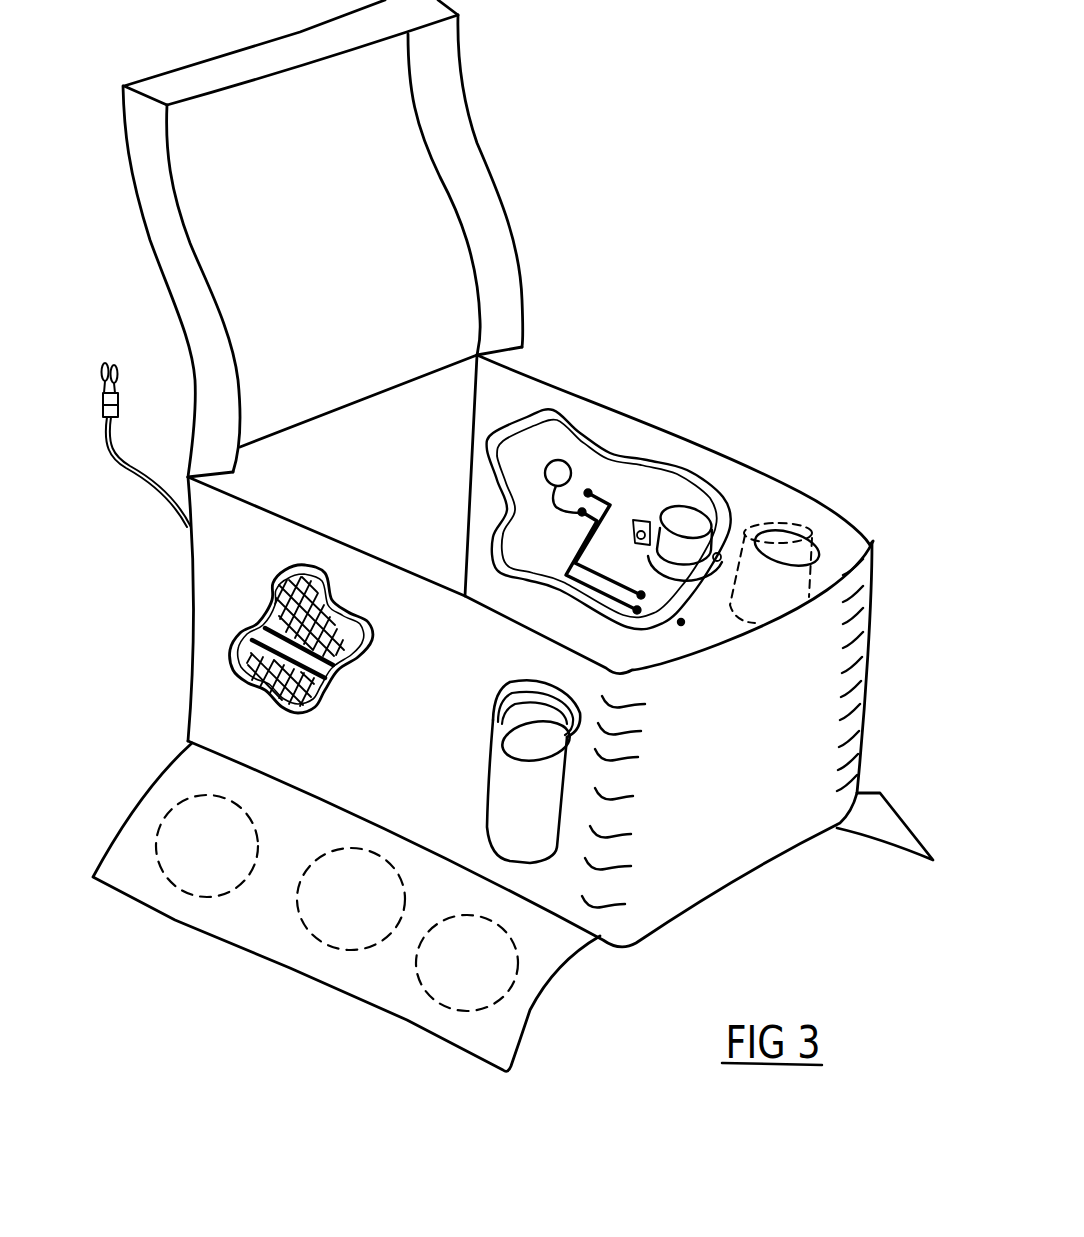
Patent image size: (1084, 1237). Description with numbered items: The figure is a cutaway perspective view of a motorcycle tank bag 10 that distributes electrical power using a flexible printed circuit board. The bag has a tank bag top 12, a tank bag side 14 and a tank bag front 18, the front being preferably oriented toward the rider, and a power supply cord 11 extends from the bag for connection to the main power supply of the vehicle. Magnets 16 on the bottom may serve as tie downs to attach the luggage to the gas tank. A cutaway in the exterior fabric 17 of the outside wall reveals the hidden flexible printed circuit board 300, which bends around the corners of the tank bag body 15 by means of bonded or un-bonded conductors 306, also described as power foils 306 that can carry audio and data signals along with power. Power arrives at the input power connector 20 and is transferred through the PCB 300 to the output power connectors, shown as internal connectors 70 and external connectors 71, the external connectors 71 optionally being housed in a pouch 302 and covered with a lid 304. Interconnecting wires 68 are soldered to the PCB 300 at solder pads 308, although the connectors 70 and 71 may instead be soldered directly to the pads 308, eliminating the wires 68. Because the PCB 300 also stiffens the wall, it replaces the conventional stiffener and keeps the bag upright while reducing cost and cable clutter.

The motorcycle tank bag 10 is at (562, 376).
The power supply cord 11 is at (119, 390).
The tank bag top 12 is at (458, 154).
The tank bag side 14 is at (830, 508).
The tank bag body 15 is at (620, 925).
The magnets 16 is at (192, 850).
The exterior fabric 17 is at (243, 597).
The tank bag front 18 is at (735, 850).
The power outlet 20 is at (567, 463).
The interconnecting wires 68 is at (547, 486).
The internal connectors 70 is at (687, 517).
The external connectors 71 is at (513, 733).
The flexible printed circuit board 300 is at (308, 594).
The pouch 302 is at (492, 796).
The lid 304 is at (497, 693).
The conductors 306 is at (570, 545).
The solder pads 308 is at (578, 511).